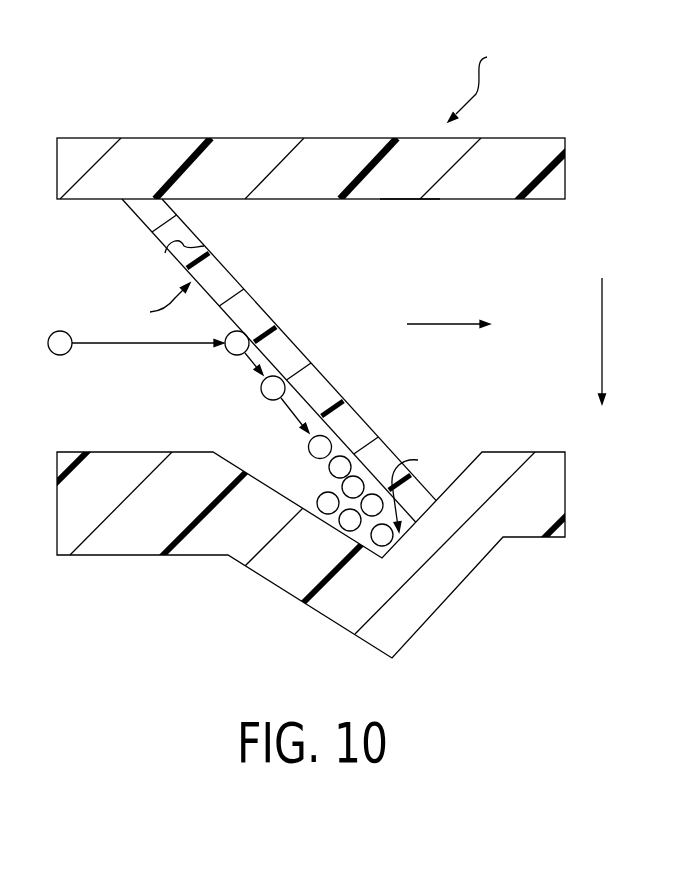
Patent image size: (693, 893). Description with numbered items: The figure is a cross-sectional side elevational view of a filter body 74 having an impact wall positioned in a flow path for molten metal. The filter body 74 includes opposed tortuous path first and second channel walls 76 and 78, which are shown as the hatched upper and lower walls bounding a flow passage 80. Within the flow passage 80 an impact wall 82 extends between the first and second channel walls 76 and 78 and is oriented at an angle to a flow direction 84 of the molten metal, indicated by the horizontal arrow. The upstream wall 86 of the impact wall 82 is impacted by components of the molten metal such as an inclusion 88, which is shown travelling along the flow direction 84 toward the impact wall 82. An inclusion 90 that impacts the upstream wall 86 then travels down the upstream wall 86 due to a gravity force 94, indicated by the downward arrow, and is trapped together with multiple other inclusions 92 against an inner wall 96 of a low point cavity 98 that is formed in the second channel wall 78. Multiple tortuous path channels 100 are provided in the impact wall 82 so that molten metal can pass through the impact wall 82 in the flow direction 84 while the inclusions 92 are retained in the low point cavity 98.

The filter body 74 is at (481, 86).
The first channel wall 76 is at (490, 180).
The second channel wall 78 is at (108, 468).
The flow passage 80 is at (408, 207).
The impact wall 82 is at (215, 282).
The flow direction 84 is at (445, 323).
The upstream wall 86 is at (155, 304).
The inclusion 88 is at (65, 352).
The inclusion 90 is at (240, 340).
The inclusions 92 is at (328, 503).
The gravity force 94 is at (602, 340).
The inner wall 96 is at (418, 490).
The low point cavity 98 is at (363, 547).
The tortuous path channels 100 is at (170, 258).